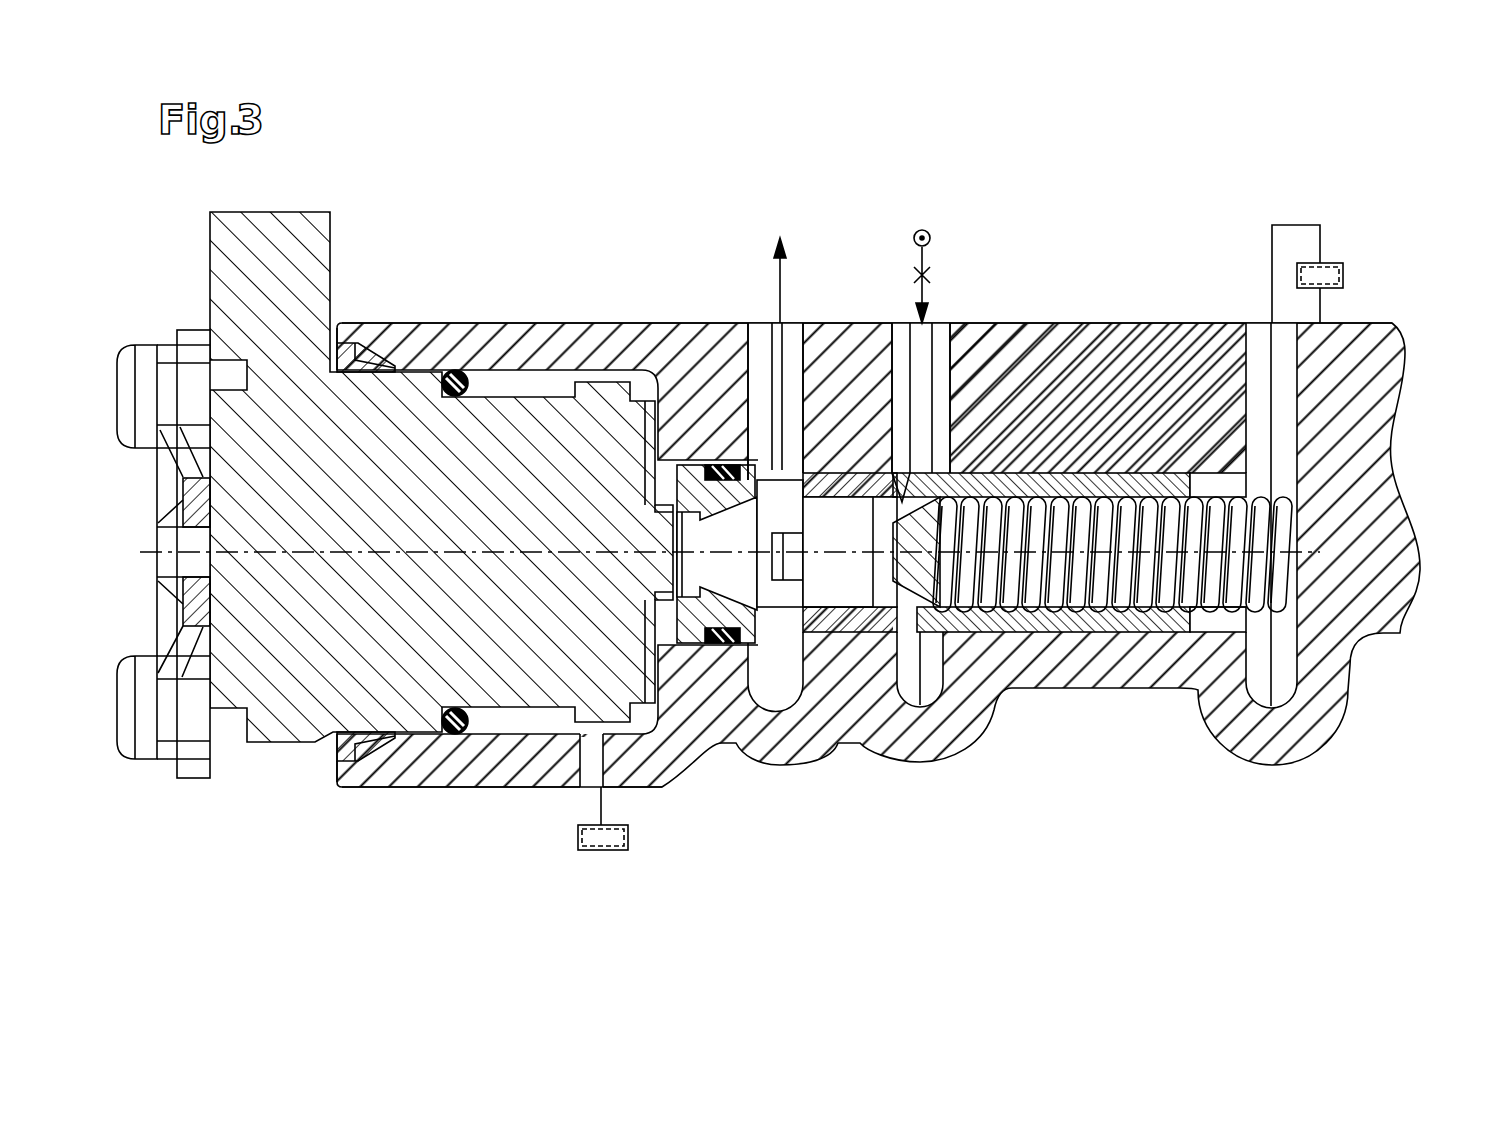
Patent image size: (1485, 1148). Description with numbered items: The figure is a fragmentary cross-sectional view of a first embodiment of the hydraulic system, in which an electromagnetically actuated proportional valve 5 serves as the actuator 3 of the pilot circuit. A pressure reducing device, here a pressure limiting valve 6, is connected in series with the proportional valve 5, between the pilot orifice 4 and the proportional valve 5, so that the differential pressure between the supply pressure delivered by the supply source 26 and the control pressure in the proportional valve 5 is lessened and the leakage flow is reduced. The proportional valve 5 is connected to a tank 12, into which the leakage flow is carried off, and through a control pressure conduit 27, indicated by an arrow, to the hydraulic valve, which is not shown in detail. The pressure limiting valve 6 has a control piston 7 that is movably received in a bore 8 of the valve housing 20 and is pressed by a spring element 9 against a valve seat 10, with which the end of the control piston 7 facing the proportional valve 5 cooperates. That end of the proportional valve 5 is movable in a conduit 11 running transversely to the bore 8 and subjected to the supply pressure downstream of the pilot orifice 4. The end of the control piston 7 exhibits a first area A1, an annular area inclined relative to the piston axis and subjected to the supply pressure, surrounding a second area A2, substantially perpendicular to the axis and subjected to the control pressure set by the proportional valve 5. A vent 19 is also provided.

The actuator 3 is at (416, 356).
The proportional valve 5 is at (520, 418).
The control pressure conduit 27 is at (778, 284).
The first area A1 is at (887, 462).
The pilot orifice 4 is at (914, 276).
The supply source 26 is at (922, 229).
The conduit 11 is at (946, 345).
The valve housing 20 is at (1060, 355).
The control piston 7 is at (1148, 495).
The pressure limiting valve 6 is at (1186, 472).
The vent 19 is at (1322, 263).
The spring element 9 is at (1275, 582).
The bore 8 is at (1210, 628).
The second area A2 is at (855, 612).
The valve seat 10 is at (872, 607).
The tank 12 is at (600, 851).